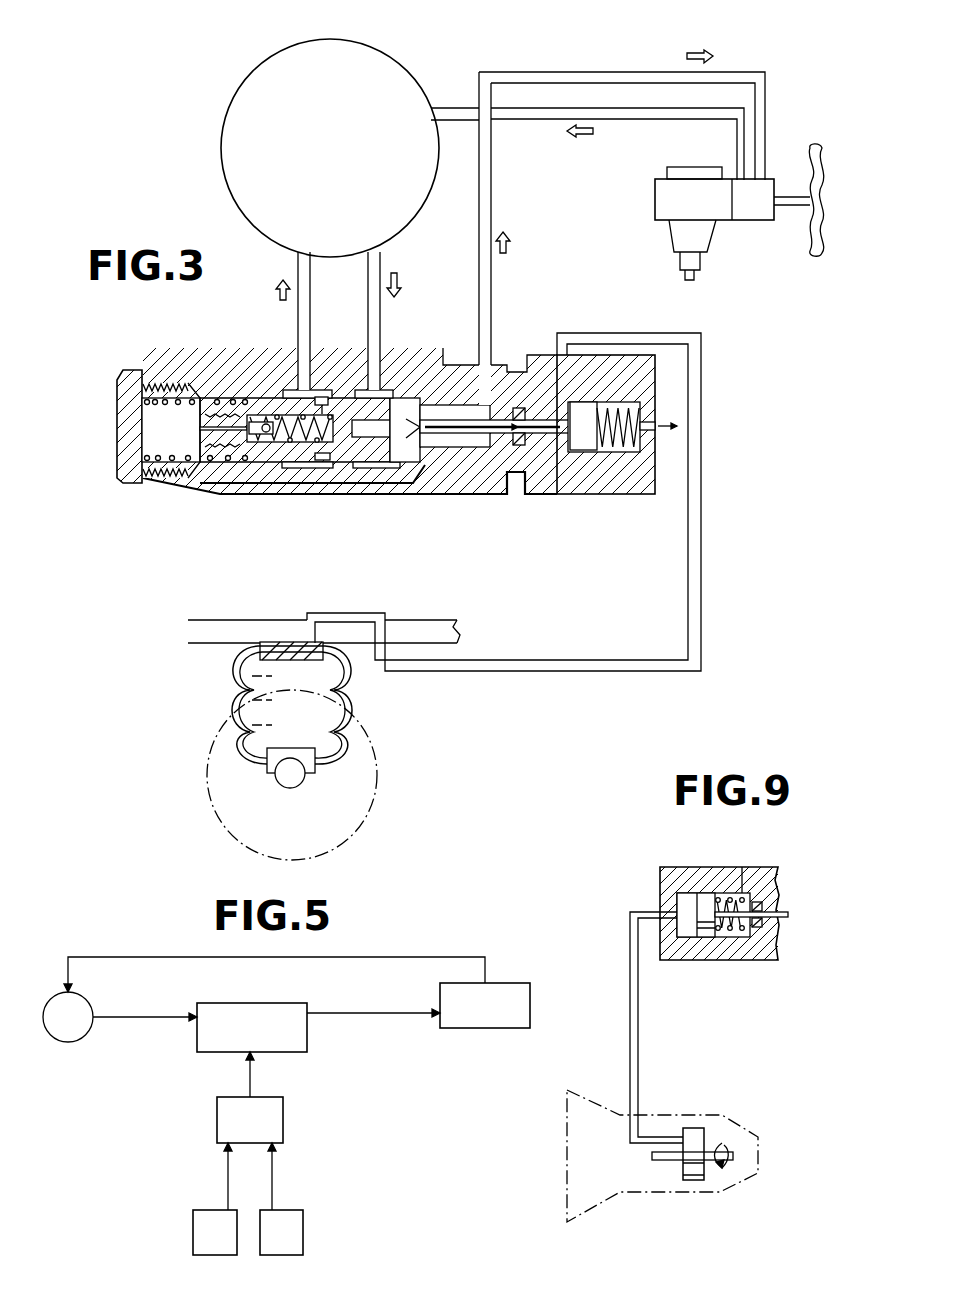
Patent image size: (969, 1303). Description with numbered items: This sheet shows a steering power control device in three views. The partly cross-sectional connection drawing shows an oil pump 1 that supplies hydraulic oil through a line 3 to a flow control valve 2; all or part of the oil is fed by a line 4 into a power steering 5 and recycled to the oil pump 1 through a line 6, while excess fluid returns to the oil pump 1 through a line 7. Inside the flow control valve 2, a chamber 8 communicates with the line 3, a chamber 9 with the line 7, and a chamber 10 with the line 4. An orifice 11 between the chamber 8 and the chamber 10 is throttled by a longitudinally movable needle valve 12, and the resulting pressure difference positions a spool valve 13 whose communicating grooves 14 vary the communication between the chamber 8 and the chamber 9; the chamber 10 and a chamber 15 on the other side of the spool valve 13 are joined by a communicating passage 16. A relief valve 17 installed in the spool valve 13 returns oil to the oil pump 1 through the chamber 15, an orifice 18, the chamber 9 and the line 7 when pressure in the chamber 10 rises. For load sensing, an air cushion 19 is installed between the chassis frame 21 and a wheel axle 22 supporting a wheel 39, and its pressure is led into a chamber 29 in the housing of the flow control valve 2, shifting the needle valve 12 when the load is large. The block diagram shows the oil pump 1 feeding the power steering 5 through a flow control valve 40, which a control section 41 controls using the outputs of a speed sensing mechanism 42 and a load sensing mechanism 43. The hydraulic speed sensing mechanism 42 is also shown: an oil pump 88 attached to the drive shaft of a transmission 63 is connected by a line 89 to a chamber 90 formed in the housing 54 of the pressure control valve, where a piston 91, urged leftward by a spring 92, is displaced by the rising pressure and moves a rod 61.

In FIG. 3, the oil pump 1 is at (392, 57).
In FIG. 5, the oil pump 1 is at (85, 1038).
In FIG. 3, the flow control valve 2 is at (243, 510).
In FIG. 3, the line 3 is at (368, 292).
In FIG. 3, the line 4 is at (491, 290).
In FIG. 3, the power steering 5 is at (713, 232).
In FIG. 5, the power steering 5 is at (508, 1032).
In FIG. 3, the line 6 is at (547, 120).
In FIG. 3, the line 7 is at (298, 343).
In FIG. 3, the chamber 8 is at (393, 395).
In FIG. 3, the chamber 9 is at (330, 397).
In FIG. 3, the chamber 10 is at (465, 447).
In FIG. 3, the orifice 11 is at (411, 418).
In FIG. 3, the needle valve 12 is at (440, 457).
In FIG. 3, the spool valve 13 is at (312, 470).
In FIG. 3, the communicating grooves 14 is at (372, 466).
In FIG. 3, the chamber 15 is at (150, 422).
In FIG. 3, the communicating passage 16 is at (275, 491).
In FIG. 3, the relief valve 17 is at (257, 422).
In FIG. 3, the orifice 18 is at (322, 397).
In FIG. 3, the air cushion 19 is at (237, 688).
In FIG. 3, the chassis frame 21 is at (230, 640).
In FIG. 3, the wheel axle 22 is at (295, 778).
In FIG. 3, the chamber 29 is at (565, 450).
In FIG. 3, the wheel 39 is at (376, 787).
In FIG. 5, the flow control valve 40 is at (197, 1043).
In FIG. 5, the control section 41 is at (217, 1125).
In FIG. 5, the speed sensing mechanism 42 is at (193, 1243).
In FIG. 9, the speed sensing mechanism 42 is at (815, 1042).
In FIG. 5, the load sensing mechanism 43 is at (303, 1238).
In FIG. 9, the housing 54 is at (762, 875).
In FIG. 9, the rod 61 is at (782, 912).
In FIG. 9, the transmission 63 is at (665, 1195).
In FIG. 9, the oil pump 88 is at (697, 1181).
In FIG. 9, the line 89 is at (630, 1037).
In FIG. 9, the chamber 90 is at (688, 904).
In FIG. 9, the piston 91 is at (706, 915).
In FIG. 9, the spring 92 is at (732, 932).